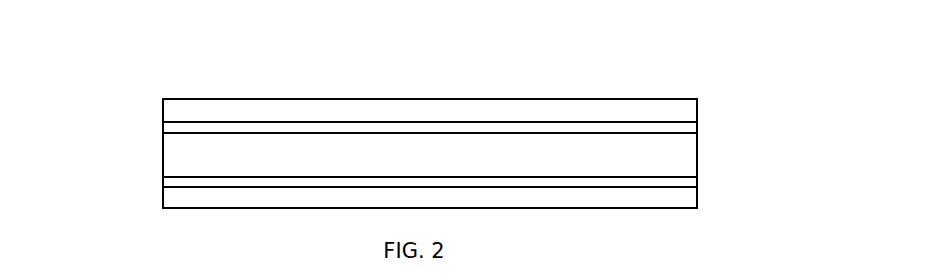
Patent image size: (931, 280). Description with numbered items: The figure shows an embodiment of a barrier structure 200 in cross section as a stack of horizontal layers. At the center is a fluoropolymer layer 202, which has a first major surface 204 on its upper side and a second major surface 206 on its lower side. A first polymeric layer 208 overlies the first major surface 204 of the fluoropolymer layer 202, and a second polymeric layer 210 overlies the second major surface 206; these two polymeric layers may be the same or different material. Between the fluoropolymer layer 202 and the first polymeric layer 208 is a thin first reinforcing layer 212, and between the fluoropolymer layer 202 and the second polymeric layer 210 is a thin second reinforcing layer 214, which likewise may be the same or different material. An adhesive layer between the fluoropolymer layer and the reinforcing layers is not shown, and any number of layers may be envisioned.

The barrier structure 200 is at (436, 64).
The fluoropolymer layer 202 is at (369, 155).
The first major surface 204 is at (475, 118).
The second major surface 206 is at (479, 155).
The first polymeric layer 208 is at (369, 110).
The second polymeric layer 210 is at (368, 197).
The first reinforcing layer 212 is at (484, 105).
The second reinforcing layer 214 is at (481, 178).